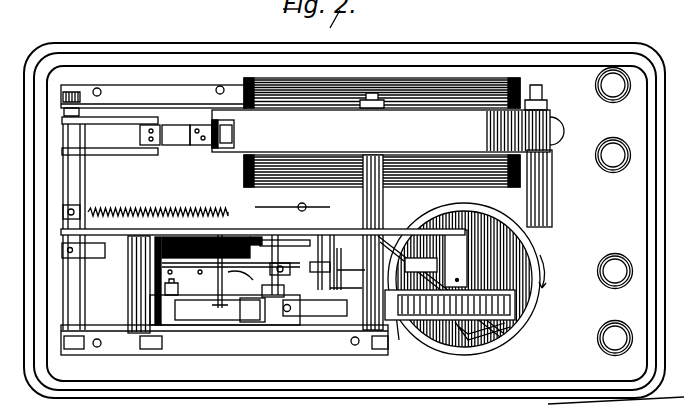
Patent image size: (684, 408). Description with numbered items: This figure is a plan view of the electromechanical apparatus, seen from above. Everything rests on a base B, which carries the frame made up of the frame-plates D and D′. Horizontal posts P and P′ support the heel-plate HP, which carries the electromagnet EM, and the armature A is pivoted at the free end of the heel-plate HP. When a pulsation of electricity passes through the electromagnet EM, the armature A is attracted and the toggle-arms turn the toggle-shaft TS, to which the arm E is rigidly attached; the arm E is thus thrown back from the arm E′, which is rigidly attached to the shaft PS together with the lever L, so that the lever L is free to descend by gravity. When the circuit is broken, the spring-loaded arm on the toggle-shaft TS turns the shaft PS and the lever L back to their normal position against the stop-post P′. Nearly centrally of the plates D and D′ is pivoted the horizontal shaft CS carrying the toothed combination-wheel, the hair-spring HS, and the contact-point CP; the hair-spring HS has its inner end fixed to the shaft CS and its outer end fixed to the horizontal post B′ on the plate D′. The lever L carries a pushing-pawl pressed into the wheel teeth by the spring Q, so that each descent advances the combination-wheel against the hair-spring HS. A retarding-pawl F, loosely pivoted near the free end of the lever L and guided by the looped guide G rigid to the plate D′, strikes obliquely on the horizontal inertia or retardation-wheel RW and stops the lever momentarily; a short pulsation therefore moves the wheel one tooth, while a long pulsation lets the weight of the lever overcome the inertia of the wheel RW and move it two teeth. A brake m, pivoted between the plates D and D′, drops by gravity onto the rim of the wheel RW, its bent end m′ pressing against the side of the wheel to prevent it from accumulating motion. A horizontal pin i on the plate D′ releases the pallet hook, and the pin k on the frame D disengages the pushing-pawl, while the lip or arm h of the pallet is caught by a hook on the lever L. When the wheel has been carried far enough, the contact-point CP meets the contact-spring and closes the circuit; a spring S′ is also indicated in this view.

The base B is at (344, 220).
The toggle-shaft TS is at (72, 187).
The armature A is at (234, 132).
The heel-plate HP is at (388, 118).
The electromagnet EM is at (382, 132).
The horizontal post P′ is at (383, 205).
The horizontal post P is at (552, 195).
The retardation-wheel RW is at (508, 252).
The lever L is at (440, 295).
The brake m is at (421, 265).
The retarding-pawl F is at (510, 322).
The guide G is at (500, 338).
The frame-plate D′ is at (185, 230).
The arm E is at (80, 256).
The arm E′ is at (105, 258).
The shaft PS is at (135, 312).
The frame-plate D is at (205, 322).
The spring Q is at (310, 316).
The shaft CS is at (272, 234).
The horizontal post B′ is at (291, 217).
The hair-spring HS is at (312, 226).
The horizontal pin i is at (322, 228).
The pin k is at (335, 228).
The contact-point CP is at (296, 258).
The arm of the pallet h is at (292, 278).
The spring S′ is at (240, 277).
The end of the brake m′ is at (345, 262).